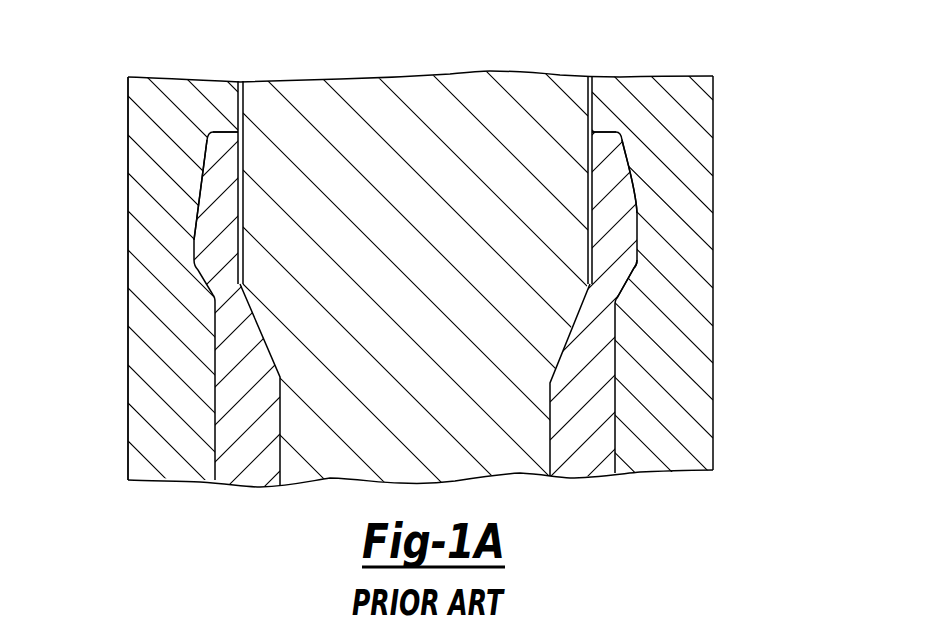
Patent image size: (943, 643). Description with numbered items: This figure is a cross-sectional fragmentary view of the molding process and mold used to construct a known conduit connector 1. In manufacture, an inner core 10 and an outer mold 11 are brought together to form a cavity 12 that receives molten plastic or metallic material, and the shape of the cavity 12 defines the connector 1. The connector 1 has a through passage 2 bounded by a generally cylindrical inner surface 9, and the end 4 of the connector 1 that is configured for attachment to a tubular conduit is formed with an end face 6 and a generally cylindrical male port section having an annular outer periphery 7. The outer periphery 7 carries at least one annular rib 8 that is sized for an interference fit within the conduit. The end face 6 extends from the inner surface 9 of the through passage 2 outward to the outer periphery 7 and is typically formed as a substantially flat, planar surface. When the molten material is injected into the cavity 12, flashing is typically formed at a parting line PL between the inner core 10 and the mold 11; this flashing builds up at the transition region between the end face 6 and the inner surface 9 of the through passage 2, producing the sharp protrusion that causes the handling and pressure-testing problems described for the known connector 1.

The conduit connector 1 is at (647, 201).
The through passage 2 is at (376, 160).
The end 4 is at (598, 133).
The end face 6 is at (223, 117).
The outer periphery 7 is at (181, 238).
The annular rib 8 is at (638, 247).
The inner surface 9 is at (255, 240).
The inner core 10 is at (550, 392).
The outer mold 11 is at (128, 338).
The cavity 12 is at (216, 193).
The parting line PL is at (255, 108).